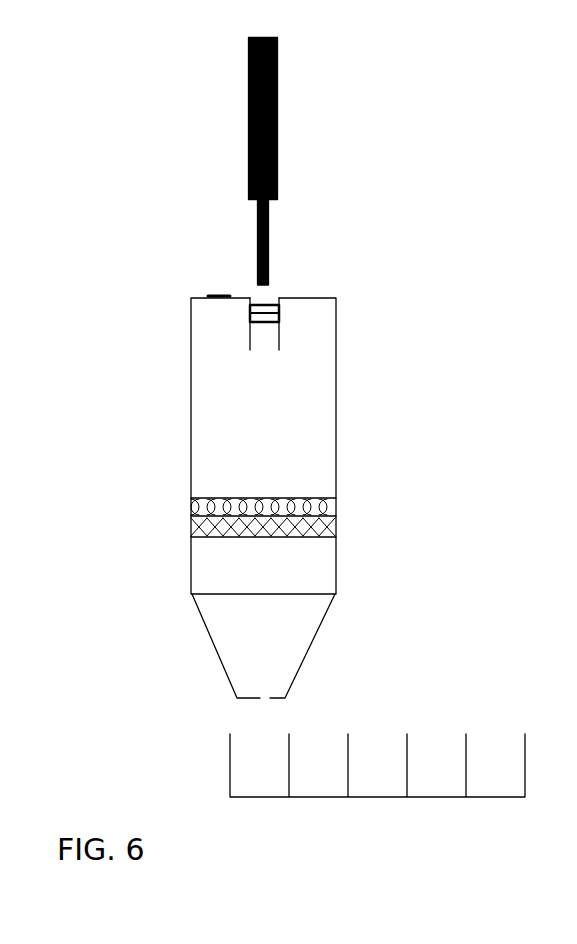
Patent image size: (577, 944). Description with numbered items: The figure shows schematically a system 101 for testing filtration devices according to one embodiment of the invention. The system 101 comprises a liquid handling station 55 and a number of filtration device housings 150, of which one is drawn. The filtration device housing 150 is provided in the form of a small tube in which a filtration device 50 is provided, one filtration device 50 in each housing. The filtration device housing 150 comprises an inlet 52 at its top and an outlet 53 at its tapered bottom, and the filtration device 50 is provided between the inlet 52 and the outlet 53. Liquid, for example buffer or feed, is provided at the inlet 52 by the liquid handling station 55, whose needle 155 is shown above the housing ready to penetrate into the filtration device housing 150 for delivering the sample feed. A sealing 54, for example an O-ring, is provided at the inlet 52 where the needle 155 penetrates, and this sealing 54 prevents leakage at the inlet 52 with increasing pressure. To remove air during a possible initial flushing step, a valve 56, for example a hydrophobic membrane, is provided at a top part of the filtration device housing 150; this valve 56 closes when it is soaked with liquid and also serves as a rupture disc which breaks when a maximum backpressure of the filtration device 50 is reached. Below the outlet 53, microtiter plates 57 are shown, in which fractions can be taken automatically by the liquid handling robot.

The system 101 is at (462, 155).
The liquid handling station 55 is at (217, 91).
The needle 155 is at (270, 235).
The filtration device housing 150 is at (370, 380).
The inlet 52 is at (267, 335).
The sealing 54 is at (262, 312).
The valve 56 is at (210, 295).
The filtration device 50 is at (330, 513).
The outlet 53 is at (258, 698).
The microtiter plates 57 is at (350, 732).